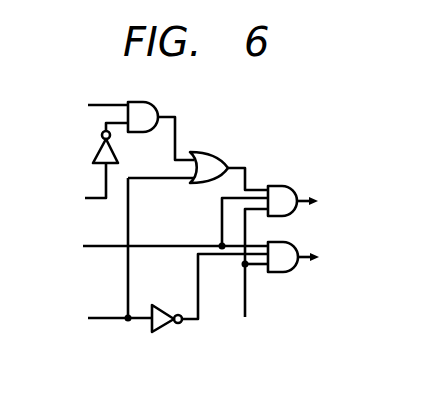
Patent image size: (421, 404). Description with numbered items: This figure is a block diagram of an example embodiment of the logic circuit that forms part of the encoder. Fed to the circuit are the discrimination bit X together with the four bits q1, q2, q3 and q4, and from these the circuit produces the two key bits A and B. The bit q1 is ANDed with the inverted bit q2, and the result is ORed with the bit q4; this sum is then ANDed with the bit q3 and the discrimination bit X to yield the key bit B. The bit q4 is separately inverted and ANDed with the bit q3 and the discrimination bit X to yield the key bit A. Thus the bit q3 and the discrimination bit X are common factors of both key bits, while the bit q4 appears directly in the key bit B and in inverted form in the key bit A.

The bit q1′ q1 is at (79, 91).
The bit q2′ q2 is at (79, 178).
The bit q3′ q3 is at (79, 232).
The bit q4′ q4 is at (79, 295).
The discrimination bit X is at (246, 337).
The key bit A is at (328, 255).
The key bit B is at (330, 200).